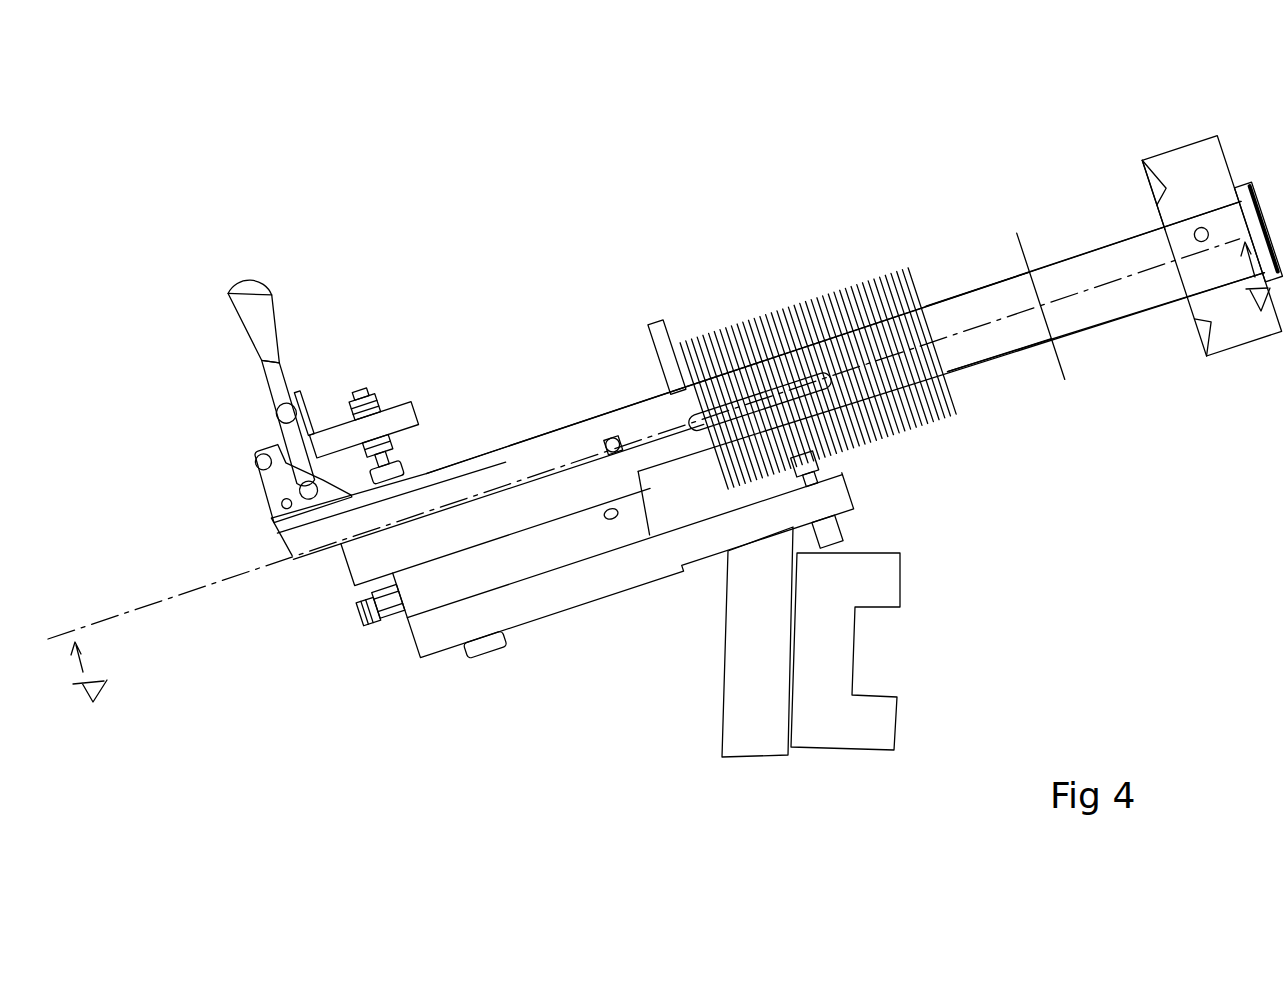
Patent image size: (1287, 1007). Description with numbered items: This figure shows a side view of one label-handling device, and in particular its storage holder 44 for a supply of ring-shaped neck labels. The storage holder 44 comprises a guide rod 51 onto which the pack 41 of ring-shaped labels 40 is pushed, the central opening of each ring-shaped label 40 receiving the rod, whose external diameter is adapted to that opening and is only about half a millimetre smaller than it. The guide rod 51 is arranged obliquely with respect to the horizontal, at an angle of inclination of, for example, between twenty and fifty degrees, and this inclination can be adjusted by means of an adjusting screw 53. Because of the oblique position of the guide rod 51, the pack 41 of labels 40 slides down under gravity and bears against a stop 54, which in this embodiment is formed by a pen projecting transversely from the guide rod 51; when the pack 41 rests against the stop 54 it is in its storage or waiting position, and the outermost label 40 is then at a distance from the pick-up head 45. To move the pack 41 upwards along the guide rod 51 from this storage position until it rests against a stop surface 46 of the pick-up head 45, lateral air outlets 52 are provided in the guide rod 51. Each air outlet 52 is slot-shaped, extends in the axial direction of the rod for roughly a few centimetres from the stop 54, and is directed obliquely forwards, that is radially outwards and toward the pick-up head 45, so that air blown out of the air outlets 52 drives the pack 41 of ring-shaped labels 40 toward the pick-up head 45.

The ring-shaped label 40 is at (1022, 235).
The pack of ring-shaped labels 41 is at (812, 295).
The storage holder 44 is at (996, 374).
The pick-up head 45 is at (1200, 133).
The stop surface 46 is at (1158, 222).
The guide rod 51 is at (990, 305).
The air outlet 52 is at (737, 403).
The adjusting screw 53 is at (826, 548).
The stop 54 is at (658, 347).